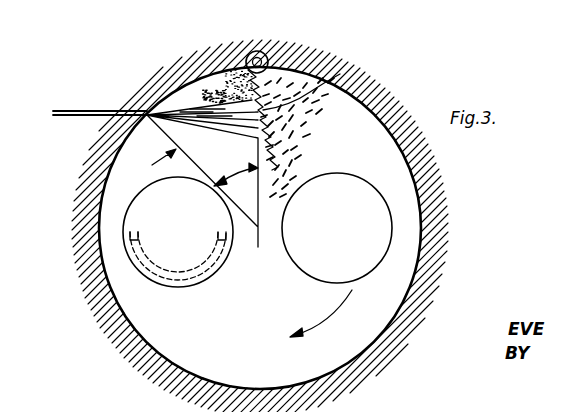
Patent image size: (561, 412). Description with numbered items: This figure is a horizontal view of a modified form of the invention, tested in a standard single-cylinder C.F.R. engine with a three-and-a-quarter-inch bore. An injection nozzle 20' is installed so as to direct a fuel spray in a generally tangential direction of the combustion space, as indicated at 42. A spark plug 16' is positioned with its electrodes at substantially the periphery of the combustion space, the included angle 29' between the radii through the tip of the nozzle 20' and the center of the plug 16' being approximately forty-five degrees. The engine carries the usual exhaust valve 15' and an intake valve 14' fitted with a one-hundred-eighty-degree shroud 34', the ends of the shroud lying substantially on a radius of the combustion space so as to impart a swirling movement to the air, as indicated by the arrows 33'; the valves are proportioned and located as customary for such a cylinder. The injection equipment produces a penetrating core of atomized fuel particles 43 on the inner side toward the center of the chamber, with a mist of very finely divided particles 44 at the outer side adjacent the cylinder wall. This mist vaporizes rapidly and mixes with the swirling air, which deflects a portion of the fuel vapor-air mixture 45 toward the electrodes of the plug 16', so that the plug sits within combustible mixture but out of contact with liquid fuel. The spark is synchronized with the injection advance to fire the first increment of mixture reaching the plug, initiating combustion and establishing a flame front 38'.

The injection nozzle 20' is at (100, 95).
The fuel spray 42 is at (203, 106).
The penetrating core of atomized fuel particles 43 is at (228, 97).
The mist of finely divided fuel particles 44 is at (210, 95).
The fuel vapor-air mixture 45 is at (233, 68).
The spark plug 16' is at (280, 51).
The flame front 38' is at (324, 125).
The exhaust valve 15' is at (387, 228).
The intake valve 14' is at (131, 232).
The shroud 34' is at (126, 264).
The arrows 33' is at (237, 243).
The included angle 29' is at (236, 170).